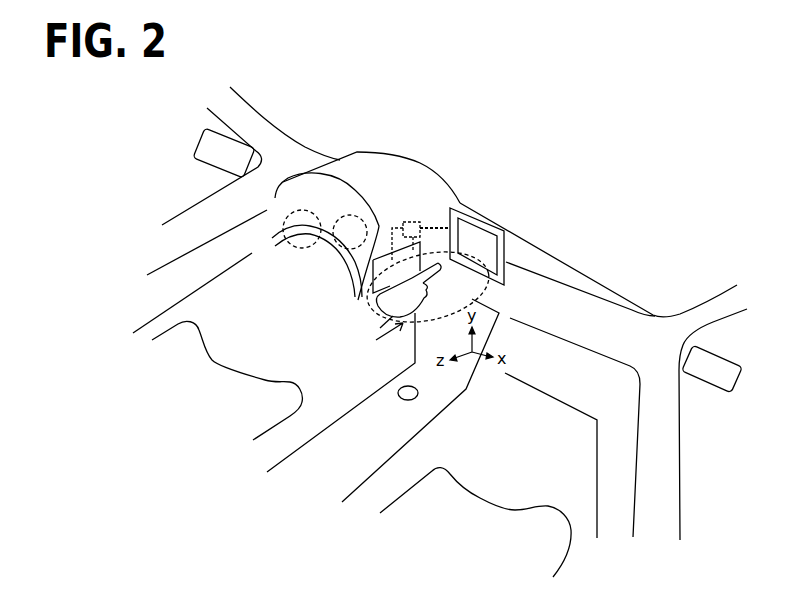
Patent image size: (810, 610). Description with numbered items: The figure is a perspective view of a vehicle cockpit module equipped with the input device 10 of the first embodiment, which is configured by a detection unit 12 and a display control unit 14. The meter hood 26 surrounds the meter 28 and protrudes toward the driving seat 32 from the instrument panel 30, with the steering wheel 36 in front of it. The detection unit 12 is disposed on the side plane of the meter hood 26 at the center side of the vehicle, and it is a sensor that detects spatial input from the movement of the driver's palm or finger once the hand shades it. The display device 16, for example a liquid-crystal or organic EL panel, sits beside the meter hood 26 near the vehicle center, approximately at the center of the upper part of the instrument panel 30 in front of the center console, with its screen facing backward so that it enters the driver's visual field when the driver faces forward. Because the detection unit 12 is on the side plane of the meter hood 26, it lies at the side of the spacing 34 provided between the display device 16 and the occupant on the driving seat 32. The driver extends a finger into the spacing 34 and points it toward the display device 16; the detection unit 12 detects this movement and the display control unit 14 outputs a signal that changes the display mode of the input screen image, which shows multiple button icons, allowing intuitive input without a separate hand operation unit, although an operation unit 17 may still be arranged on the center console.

The input device 10 is at (454, 118).
The detection unit 12 is at (375, 257).
The display control unit 14 is at (412, 222).
The display device 16 is at (485, 232).
The operation unit 17 is at (417, 395).
The meter hood 26 is at (332, 172).
The meter 28 is at (303, 209).
The instrument panel 30 is at (538, 262).
The driving seat 32 is at (248, 381).
The spacing 34 is at (486, 287).
The steering wheel 36 is at (320, 237).